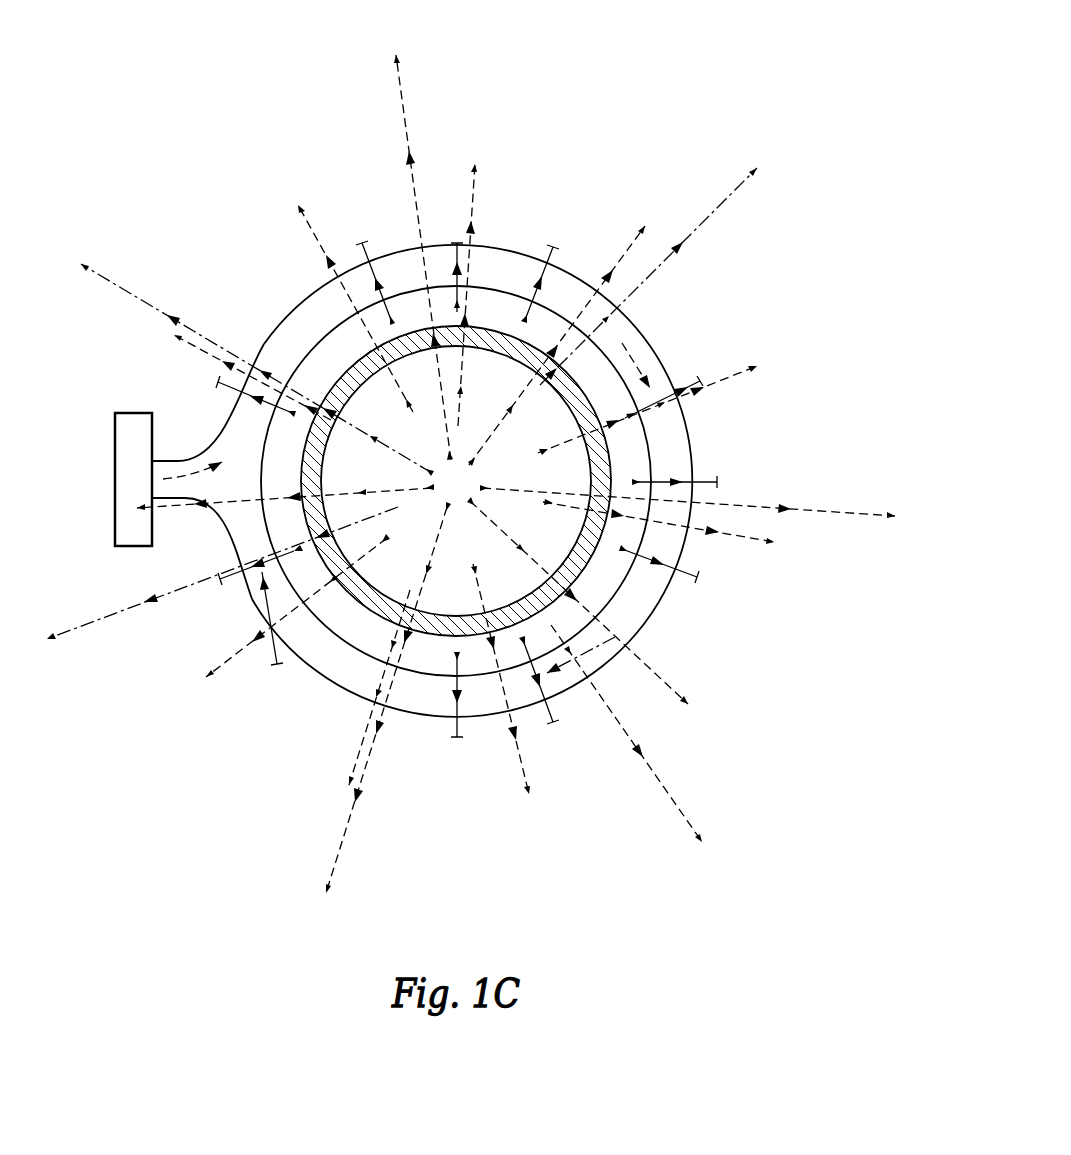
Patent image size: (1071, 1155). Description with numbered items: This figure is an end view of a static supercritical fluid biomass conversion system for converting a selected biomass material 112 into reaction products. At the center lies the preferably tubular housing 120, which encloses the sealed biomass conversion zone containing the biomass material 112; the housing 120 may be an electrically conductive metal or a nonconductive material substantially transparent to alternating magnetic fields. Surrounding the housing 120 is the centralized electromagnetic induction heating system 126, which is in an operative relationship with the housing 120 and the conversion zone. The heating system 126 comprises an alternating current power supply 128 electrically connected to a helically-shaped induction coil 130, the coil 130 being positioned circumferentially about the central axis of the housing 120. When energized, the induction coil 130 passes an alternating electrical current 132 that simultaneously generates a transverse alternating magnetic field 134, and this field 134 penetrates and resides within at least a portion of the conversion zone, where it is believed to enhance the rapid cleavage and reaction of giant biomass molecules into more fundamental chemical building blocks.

The biomass material 112 is at (550, 529).
The housing 120 is at (612, 457).
The centralized electromagnetic induction heating system 126 is at (102, 450).
The alternating current power supply 128 is at (125, 523).
The induction coil 130 is at (479, 718).
The alternating electrical current 132 is at (176, 478).
The transverse alternating magnetic field 134 is at (653, 284).